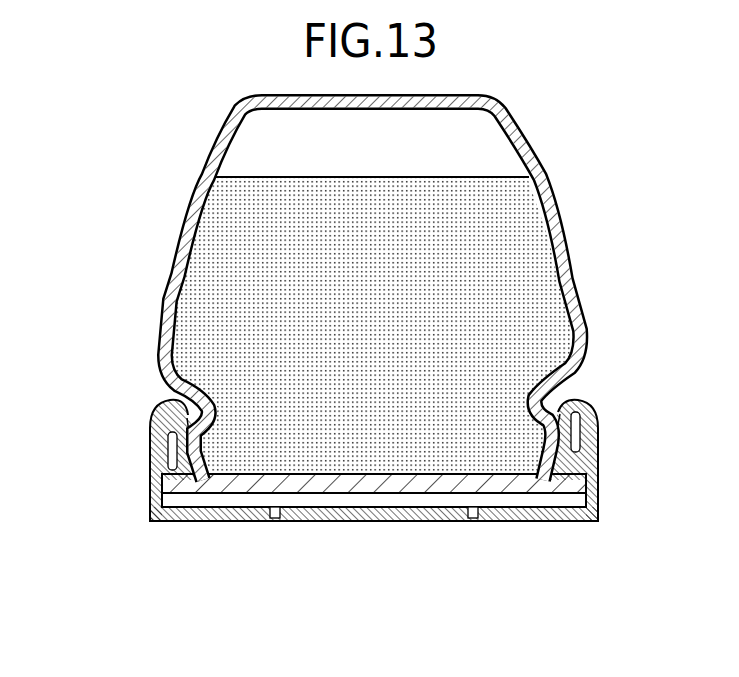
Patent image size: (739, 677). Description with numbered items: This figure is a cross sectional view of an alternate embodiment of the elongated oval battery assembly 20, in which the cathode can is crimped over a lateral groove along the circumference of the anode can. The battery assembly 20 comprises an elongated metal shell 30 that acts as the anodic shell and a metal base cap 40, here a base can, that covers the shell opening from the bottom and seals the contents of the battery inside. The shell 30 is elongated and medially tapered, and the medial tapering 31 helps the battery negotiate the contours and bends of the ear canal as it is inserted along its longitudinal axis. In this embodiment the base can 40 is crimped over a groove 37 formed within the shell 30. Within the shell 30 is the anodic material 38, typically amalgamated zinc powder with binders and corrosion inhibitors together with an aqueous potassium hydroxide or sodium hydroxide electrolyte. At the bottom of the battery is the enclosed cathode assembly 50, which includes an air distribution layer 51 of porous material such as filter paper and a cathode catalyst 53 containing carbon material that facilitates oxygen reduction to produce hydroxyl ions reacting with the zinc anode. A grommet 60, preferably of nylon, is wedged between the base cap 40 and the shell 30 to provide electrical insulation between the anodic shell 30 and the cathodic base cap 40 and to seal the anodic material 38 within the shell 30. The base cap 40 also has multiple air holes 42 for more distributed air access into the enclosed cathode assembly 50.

The battery assembly 20 is at (132, 268).
The shell 30 is at (582, 313).
The medial tapering 31 is at (520, 117).
The groove 37 is at (567, 395).
The anodic material 38 is at (520, 220).
The base cap 40 is at (150, 502).
The air holes 42 is at (473, 521).
The cathode assembly 50 is at (435, 385).
The air distribution layer 51 is at (385, 502).
The cathode catalyst 53 is at (410, 478).
The grommet 60 is at (593, 490).